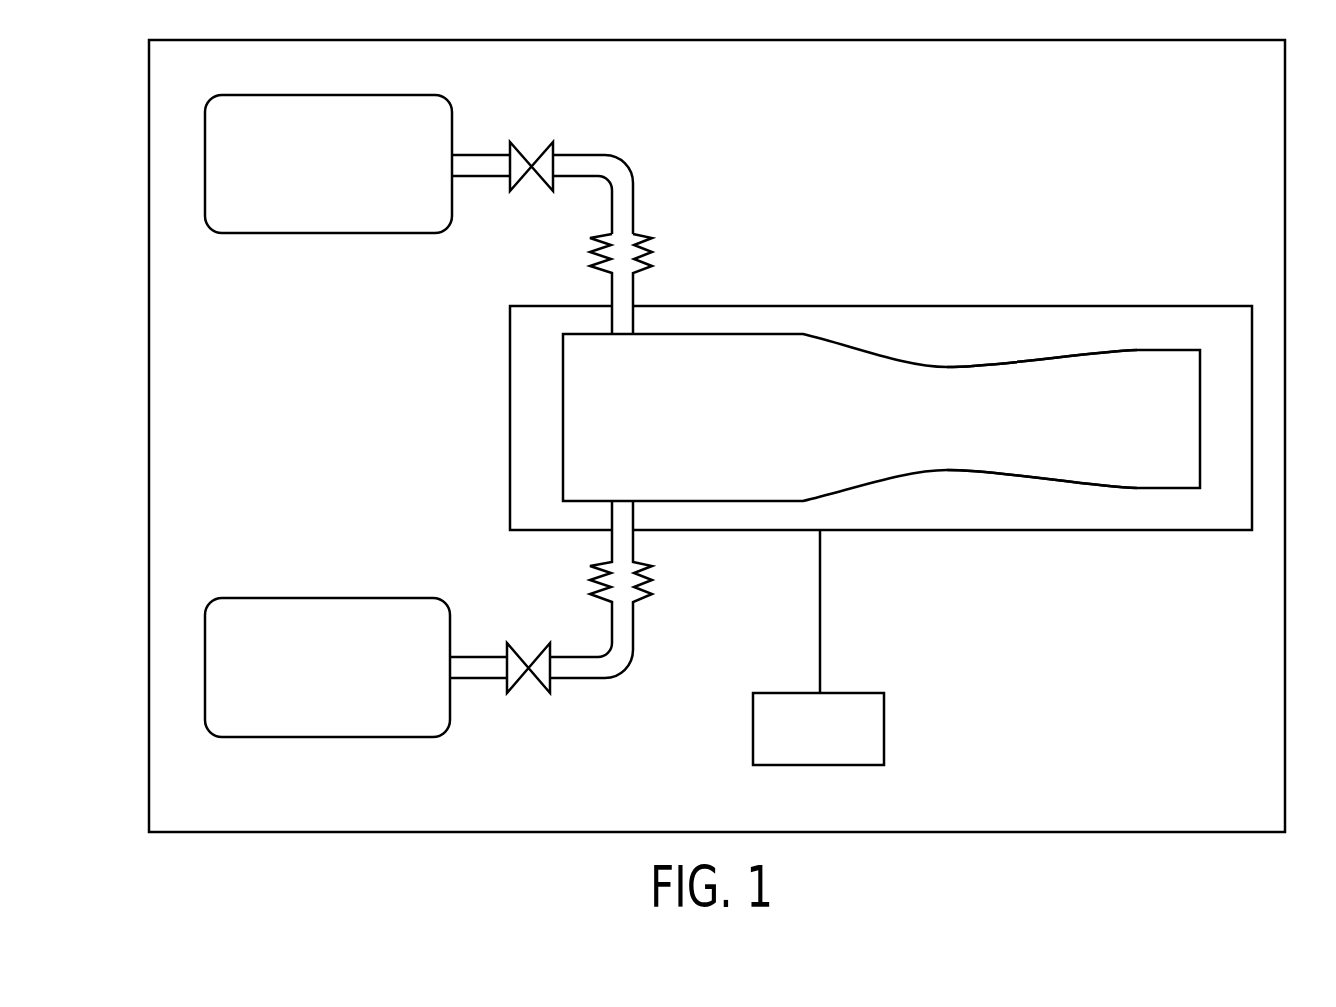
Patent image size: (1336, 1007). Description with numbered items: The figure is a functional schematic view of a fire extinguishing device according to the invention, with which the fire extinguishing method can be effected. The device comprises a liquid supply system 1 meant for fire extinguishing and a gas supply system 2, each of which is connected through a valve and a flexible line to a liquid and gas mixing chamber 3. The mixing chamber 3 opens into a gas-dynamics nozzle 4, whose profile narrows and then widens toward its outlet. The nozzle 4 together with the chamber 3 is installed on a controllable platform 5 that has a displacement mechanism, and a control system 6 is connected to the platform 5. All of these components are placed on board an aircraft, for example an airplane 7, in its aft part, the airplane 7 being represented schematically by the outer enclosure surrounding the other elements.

The liquid supply system 1 is at (375, 222).
The gas supply system 2 is at (373, 612).
The liquid and gas mixing chamber 3 is at (657, 485).
The gas-dynamics nozzle 4 is at (1060, 460).
The controllable platform 5 is at (935, 318).
The control system 6 is at (829, 747).
The airplane 7 is at (1272, 145).